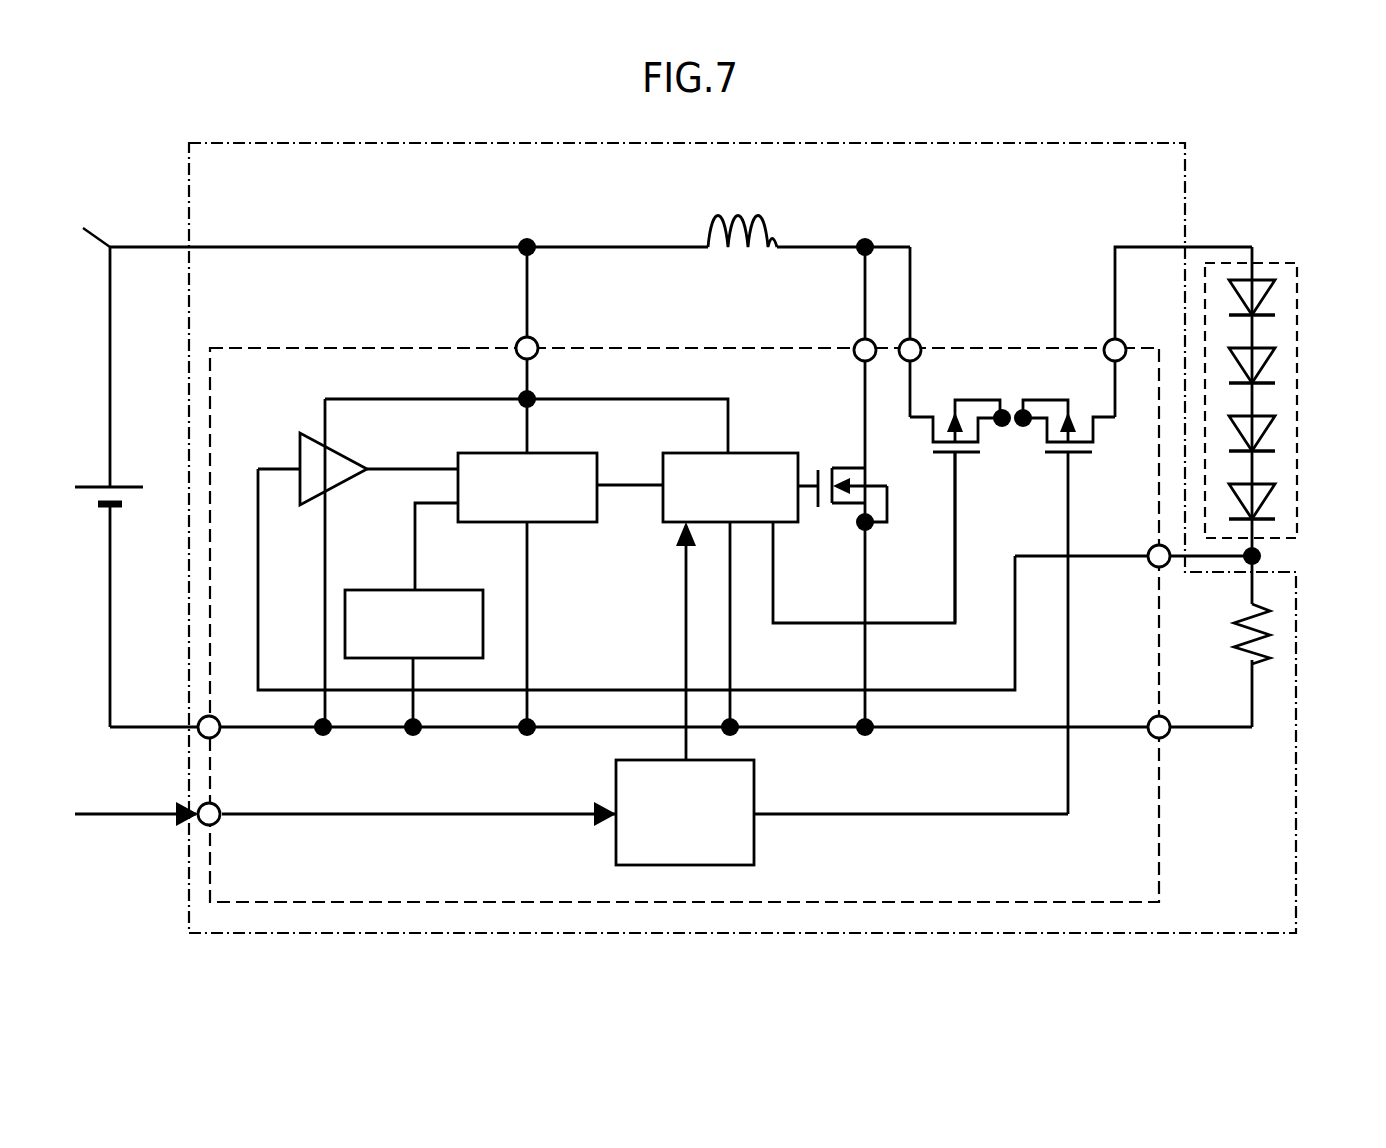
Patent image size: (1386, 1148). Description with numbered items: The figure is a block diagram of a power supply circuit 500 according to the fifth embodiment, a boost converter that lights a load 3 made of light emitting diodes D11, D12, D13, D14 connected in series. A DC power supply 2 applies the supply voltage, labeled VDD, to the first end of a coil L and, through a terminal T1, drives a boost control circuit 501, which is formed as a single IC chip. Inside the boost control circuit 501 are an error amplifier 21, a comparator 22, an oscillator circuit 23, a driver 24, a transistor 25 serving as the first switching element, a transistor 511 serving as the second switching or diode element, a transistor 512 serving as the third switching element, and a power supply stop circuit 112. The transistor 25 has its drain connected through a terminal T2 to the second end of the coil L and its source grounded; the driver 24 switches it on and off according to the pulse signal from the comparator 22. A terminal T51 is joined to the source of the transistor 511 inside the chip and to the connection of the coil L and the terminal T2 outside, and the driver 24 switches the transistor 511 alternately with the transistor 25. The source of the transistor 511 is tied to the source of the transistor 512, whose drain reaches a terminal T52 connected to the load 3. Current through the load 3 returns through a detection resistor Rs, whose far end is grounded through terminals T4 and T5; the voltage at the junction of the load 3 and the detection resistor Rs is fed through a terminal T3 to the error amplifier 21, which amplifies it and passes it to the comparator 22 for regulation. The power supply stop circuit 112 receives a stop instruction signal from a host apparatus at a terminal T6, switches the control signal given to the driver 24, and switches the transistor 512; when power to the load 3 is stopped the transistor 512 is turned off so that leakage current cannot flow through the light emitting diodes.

The power supply circuit 500 is at (200, 138).
The boost control circuit 501 is at (310, 348).
The DC power supply 2 is at (92, 487).
The load 3 is at (1284, 453).
The error amplifier 21 is at (300, 438).
The comparator 22 is at (475, 453).
The oscillator circuit 23 is at (392, 589).
The driver 24 is at (707, 453).
The transistor 25 is at (840, 467).
The transistor 511 is at (960, 494).
The transistor 512 is at (1064, 590).
The power supply stop circuit 112 is at (757, 771).
The coil L is at (742, 213).
The detection resistor Rs is at (1272, 627).
The light emitting diode D11 is at (1266, 300).
The light emitting diode D12 is at (1266, 368).
The light emitting diode D13 is at (1266, 436).
The light emitting diode D14 is at (1266, 504).
The terminal T1 is at (497, 350).
The terminal T2 is at (853, 357).
The terminal T3 is at (1133, 579).
The terminal T4 is at (1200, 741).
The terminal T5 is at (634, 713).
The terminal T6 is at (345, 802).
The terminal T51 is at (932, 332).
The terminal T52 is at (1158, 332).
The power supply line VDD is at (475, 229).